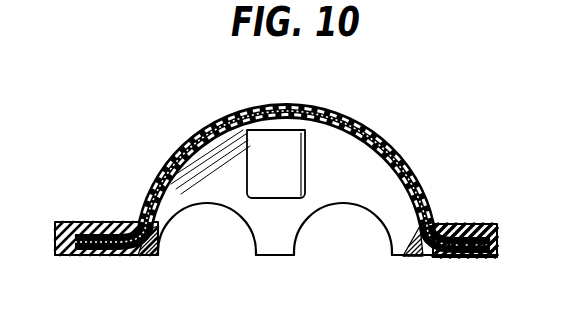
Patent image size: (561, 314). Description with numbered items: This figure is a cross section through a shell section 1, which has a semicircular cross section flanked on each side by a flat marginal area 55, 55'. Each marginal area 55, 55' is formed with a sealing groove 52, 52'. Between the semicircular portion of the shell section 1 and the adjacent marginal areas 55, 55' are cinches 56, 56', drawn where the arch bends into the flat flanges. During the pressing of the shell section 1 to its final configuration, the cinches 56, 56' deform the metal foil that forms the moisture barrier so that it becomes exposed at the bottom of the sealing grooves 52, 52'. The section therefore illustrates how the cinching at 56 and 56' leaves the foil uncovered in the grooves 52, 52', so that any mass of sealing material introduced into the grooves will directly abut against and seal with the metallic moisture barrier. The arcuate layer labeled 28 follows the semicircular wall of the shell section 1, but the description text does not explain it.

The shell section 1 is at (366, 140).
The arcuate sheath layer 28 is at (174, 153).
The sealing groove 52 is at (106, 264).
The sealing groove 52' is at (464, 269).
The marginal area 55 is at (86, 220).
The marginal area 55' is at (492, 223).
The cinch 56 is at (128, 217).
The cinch 56' is at (435, 214).